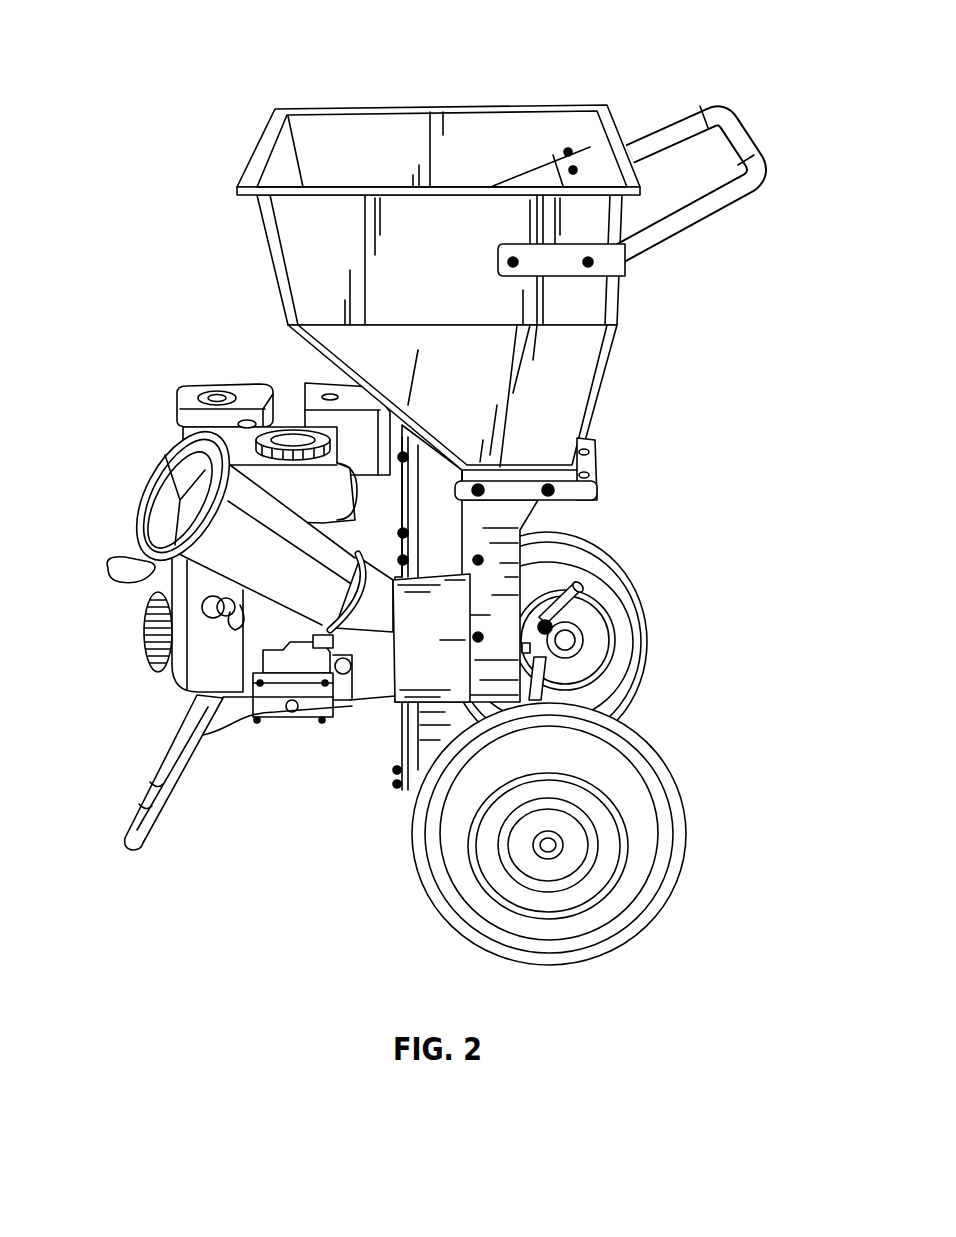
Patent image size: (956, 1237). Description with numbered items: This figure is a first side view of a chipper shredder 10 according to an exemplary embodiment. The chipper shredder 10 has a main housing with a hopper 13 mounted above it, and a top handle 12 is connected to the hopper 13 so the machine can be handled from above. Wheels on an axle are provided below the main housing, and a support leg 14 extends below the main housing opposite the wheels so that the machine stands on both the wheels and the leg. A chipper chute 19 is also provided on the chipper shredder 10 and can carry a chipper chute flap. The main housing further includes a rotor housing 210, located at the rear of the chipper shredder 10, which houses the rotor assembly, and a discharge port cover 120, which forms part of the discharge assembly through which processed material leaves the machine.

The chipper shredder 10 is at (438, 489).
The top handle 12 is at (745, 137).
The hopper 13 is at (298, 227).
The support leg 14 is at (140, 813).
The chipper chute 19 is at (217, 550).
The discharge port cover 120 is at (384, 699).
The rotor housing 210 is at (537, 607).